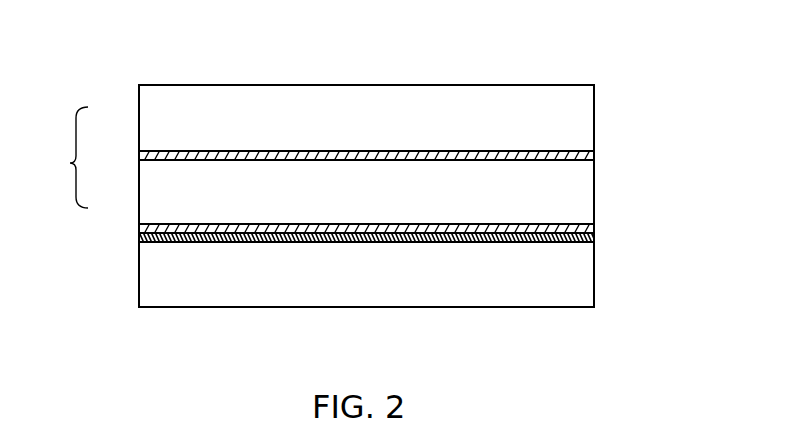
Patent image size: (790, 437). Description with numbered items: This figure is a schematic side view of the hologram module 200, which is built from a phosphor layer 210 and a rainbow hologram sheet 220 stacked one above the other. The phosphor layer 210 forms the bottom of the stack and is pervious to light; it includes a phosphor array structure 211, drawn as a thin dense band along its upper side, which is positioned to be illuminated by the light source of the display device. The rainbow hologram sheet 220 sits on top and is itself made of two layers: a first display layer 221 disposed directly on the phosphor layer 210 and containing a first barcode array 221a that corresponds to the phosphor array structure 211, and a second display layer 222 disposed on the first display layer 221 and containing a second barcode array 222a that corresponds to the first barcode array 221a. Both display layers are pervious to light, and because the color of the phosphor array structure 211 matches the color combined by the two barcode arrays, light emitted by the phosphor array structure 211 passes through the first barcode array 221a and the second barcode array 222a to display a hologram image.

The hologram module 200 is at (568, 27).
The phosphor layer 210 is at (157, 275).
The phosphor array structure 211 is at (283, 242).
The rainbow hologram sheet 220 is at (64, 157).
The first display layer 221 is at (157, 195).
The first barcode array 221a is at (317, 224).
The second display layer 222 is at (157, 118).
The second barcode array 222a is at (255, 151).